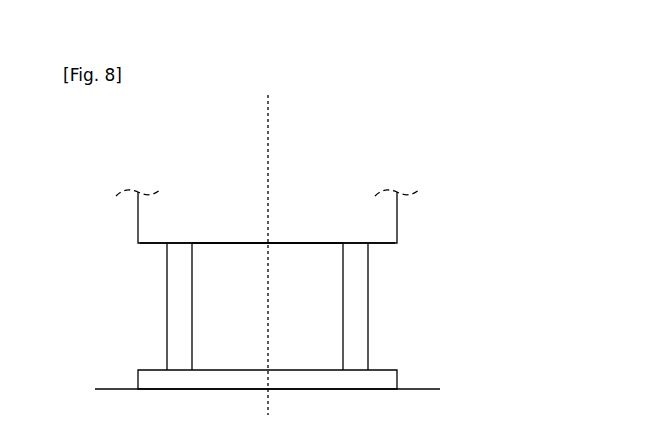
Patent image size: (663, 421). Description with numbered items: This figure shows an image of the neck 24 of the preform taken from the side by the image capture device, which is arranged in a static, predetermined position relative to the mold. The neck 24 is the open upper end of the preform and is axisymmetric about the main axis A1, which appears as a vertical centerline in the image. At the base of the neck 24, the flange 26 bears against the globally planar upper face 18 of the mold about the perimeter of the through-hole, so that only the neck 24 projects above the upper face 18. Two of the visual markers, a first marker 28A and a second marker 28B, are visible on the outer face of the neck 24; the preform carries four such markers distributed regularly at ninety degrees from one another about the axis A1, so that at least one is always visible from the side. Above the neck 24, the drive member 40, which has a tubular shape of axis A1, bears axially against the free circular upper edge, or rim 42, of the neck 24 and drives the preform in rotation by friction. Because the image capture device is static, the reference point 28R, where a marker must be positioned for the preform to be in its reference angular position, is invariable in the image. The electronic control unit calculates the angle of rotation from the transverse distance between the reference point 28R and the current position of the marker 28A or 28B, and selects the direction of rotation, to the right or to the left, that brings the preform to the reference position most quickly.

The main axis A1 is at (266, 147).
The upper face 18 is at (115, 389).
The neck 24 is at (400, 262).
The flange 26 is at (385, 380).
The marker 28A is at (345, 285).
The marker 28B is at (190, 318).
The reference point 28R is at (270, 278).
The drive member 40 is at (157, 212).
The rim 42 is at (238, 242).